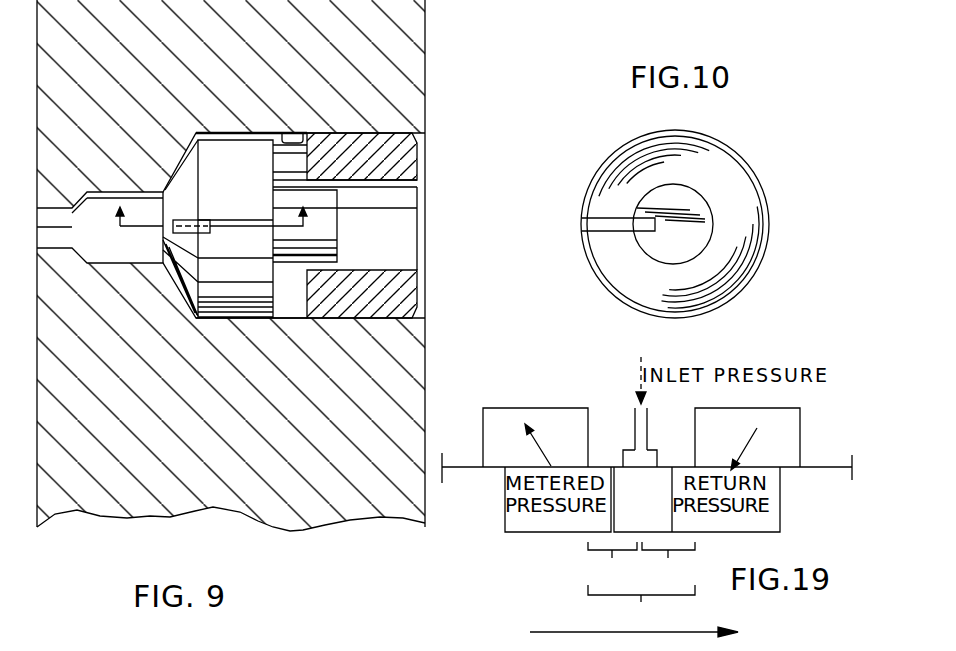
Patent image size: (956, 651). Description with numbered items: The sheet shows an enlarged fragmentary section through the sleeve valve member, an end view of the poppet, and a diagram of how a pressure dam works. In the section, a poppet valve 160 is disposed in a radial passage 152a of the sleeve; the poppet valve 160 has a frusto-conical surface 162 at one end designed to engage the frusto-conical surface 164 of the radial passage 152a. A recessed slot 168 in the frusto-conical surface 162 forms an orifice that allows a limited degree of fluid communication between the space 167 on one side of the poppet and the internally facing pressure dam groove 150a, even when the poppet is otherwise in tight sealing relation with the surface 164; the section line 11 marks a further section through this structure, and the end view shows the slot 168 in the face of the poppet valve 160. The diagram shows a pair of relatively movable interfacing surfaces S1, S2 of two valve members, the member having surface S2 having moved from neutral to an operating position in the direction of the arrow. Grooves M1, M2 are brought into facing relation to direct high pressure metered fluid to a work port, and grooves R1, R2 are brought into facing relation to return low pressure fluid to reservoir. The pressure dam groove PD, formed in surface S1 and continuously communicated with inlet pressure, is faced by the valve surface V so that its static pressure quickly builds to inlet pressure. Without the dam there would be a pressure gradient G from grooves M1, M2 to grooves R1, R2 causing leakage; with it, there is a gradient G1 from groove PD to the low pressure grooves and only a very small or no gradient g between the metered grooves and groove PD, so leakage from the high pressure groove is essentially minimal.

In FIG. 9, the pressure dam groove 150a is at (58, 217).
In FIG. 9, the section line 11- 11 is at (212, 200).
In FIG. 9, the frusto-conical surface of radial passageway 164 is at (172, 172).
In FIG. 9, the frusto-conical surface 162 is at (234, 133).
In FIG. 10, the frusto-conical surface 162 is at (748, 200).
In FIG. 9, the poppet valve 160 is at (250, 318).
In FIG. 10, the poppet valve 160 is at (742, 150).
In FIG. 9, the recessed slot 168 is at (193, 218).
In FIG. 10, the recessed slot 168 is at (609, 222).
In FIG. 9, the radial passage 152a is at (303, 132).
In FIG. 9, the space 167 is at (337, 228).
In FIG. 19, the metered fluid groove M1 is at (588, 437).
In FIG. 19, the metered fluid groove M2 is at (540, 530).
In FIG. 19, the pressure dam groove PD is at (652, 463).
In FIG. 19, the valve surface V is at (641, 470).
In FIG. 19, the return groove R1 is at (797, 428).
In FIG. 19, the interfacing surface S1 is at (806, 467).
In FIG. 19, the interfacing surface S2 is at (790, 468).
In FIG. 19, the return groove R2 is at (775, 522).
In FIG. 19, the pressure gradient g is at (612, 565).
In FIG. 19, the pressure gradient G1 is at (668, 566).
In FIG. 19, the pressure gradient G is at (641, 606).